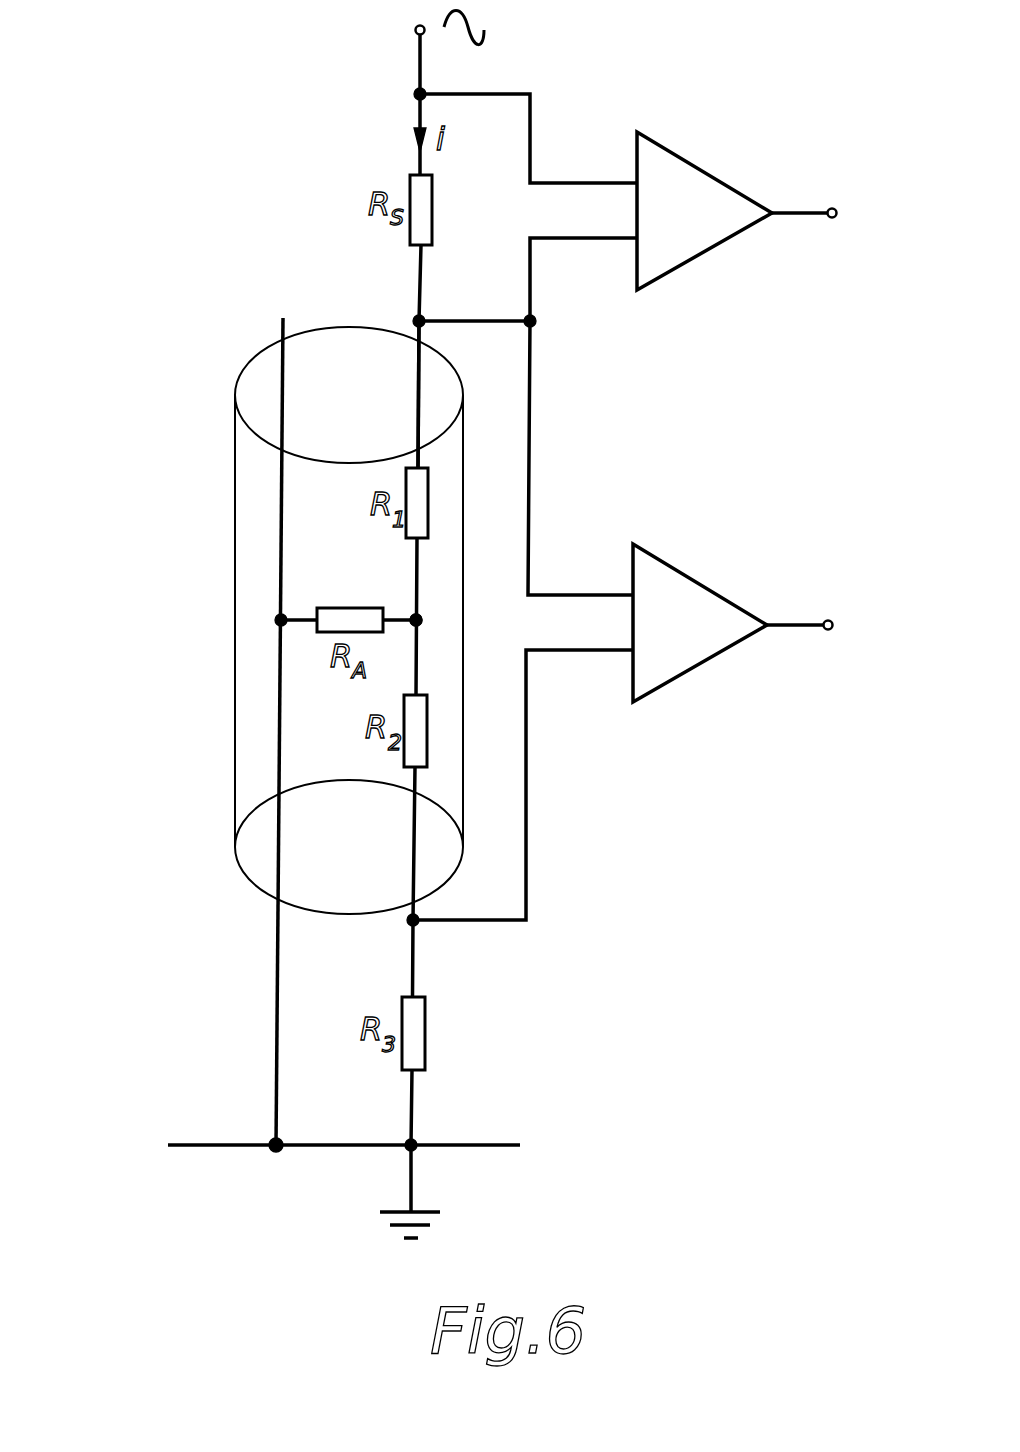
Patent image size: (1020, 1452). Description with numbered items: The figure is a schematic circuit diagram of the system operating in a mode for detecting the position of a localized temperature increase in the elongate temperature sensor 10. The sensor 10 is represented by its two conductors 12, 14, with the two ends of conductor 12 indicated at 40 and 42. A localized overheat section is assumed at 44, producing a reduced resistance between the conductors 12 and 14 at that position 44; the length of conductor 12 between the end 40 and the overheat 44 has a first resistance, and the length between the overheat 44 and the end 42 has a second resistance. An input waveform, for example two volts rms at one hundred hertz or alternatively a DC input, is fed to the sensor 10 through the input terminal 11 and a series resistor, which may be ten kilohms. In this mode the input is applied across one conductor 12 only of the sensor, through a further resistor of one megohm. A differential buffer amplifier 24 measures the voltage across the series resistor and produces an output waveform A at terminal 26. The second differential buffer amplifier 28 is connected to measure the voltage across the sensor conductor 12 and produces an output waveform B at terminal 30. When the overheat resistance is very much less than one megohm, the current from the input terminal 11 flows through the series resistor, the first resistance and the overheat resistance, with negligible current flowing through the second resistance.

The sensor 10 is at (214, 479).
The input terminal 11 is at (414, 29).
The conductor 12 is at (420, 375).
The conductor 14 is at (280, 372).
The differential buffer amplifier 24 is at (705, 172).
The terminal 26 is at (828, 222).
The second differential buffer amplifier 28 is at (696, 578).
The terminal 30 is at (825, 633).
The end of conductor 12 40 is at (416, 318).
The end of conductor 12 42 is at (410, 925).
The localized overheat section 44 is at (420, 618).